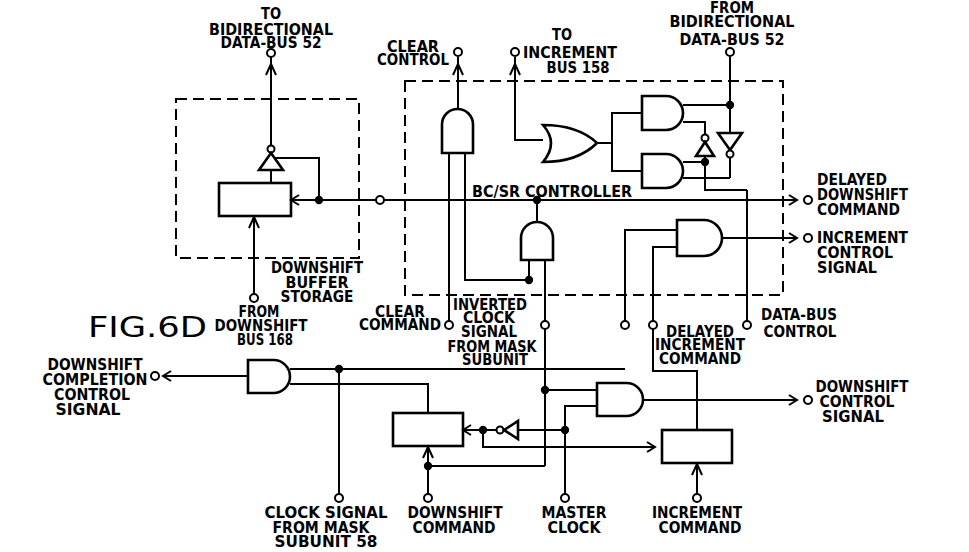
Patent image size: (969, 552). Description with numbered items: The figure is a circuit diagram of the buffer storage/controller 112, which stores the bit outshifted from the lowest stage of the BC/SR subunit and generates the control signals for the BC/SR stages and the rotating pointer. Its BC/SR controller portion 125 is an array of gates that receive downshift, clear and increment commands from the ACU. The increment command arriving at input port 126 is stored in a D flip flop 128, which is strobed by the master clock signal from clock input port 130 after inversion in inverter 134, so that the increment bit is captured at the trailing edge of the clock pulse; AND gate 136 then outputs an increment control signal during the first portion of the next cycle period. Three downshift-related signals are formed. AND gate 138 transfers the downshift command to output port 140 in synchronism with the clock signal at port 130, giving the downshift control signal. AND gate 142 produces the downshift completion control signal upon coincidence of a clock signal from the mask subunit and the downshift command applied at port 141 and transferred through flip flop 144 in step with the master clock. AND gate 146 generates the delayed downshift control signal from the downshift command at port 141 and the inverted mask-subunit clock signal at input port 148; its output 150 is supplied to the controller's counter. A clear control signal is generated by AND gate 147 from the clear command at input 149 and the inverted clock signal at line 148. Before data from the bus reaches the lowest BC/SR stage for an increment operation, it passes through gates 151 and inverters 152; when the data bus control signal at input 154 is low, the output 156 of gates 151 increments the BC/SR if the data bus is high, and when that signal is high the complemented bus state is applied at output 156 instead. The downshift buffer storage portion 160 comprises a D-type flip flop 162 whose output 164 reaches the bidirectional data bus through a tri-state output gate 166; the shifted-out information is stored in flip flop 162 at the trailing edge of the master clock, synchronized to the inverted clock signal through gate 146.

The buffer storage/controller 112 is at (802, 101).
The BC/SR controller portion 125 is at (768, 141).
The input port 126 is at (702, 498).
The D flip flop 128 is at (734, 442).
The clock input port 130 is at (570, 498).
The inverter 134 is at (510, 420).
The AND gate 136 is at (698, 246).
The AND gate 138 is at (625, 392).
The output port 140 is at (753, 397).
The port 141 is at (436, 497).
The AND gate 142 is at (272, 385).
The flip flop 144 is at (398, 427).
The AND gate 146 is at (548, 241).
The AND gate 147 is at (470, 132).
The input port 148 is at (549, 324).
The input 149 is at (448, 288).
The output of gate 146 150 is at (806, 196).
The gates 151 is at (612, 105).
The inverters 152 is at (736, 145).
The input 154 is at (750, 329).
The output 156 is at (513, 74).
The downshift buffer storage portion 160 is at (202, 249).
The D-type flip flop 162 is at (234, 187).
The output 164 is at (274, 117).
The tri-state output gate 166 is at (266, 158).